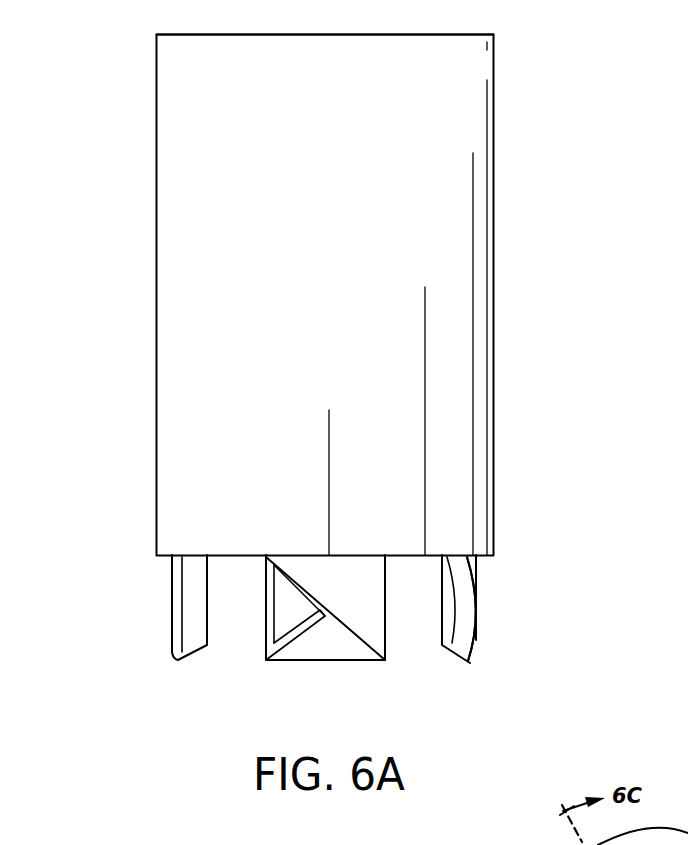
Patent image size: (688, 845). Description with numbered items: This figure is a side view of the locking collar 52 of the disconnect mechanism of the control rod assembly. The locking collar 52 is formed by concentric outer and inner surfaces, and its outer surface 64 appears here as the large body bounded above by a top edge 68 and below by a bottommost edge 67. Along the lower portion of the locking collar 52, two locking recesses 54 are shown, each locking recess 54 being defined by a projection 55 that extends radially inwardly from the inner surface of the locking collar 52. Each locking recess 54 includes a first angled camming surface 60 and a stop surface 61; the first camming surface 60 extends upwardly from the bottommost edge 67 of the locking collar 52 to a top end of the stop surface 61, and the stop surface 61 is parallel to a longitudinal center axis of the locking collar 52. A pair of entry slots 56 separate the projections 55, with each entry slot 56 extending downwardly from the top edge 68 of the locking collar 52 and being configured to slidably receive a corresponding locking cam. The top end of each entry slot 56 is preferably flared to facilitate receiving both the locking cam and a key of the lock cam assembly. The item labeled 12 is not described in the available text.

The curved blade tab 12 is at (468, 622).
The locking collar 52 is at (130, 262).
The locking recess 54 is at (236, 598).
The projection 55 is at (136, 597).
The entry slot 56 is at (417, 598).
The first angled camming surface 60 is at (298, 640).
The stop surface 61 is at (198, 597).
The outer surface 64 is at (460, 288).
The bottommost edge 67 is at (477, 670).
The top edge 68 is at (200, 33).